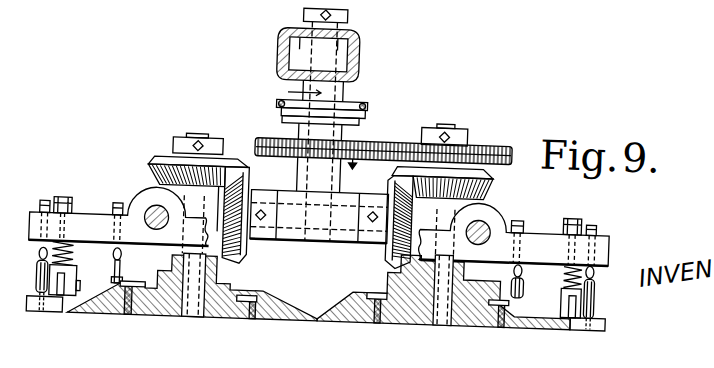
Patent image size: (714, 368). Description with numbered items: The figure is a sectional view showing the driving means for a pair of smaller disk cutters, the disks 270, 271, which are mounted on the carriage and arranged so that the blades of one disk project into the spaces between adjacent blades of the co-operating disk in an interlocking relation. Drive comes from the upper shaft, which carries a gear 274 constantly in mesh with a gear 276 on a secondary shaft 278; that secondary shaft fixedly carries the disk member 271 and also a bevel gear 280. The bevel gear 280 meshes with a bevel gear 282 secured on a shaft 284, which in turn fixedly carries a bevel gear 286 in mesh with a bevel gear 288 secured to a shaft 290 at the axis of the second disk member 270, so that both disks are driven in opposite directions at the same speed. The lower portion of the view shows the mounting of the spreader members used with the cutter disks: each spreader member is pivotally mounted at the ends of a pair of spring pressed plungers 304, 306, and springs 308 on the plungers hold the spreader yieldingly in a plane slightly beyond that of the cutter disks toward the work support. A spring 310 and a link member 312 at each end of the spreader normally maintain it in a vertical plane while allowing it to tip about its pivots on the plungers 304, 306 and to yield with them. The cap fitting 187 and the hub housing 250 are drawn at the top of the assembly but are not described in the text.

The top cap fitting 187 is at (343, 12).
The hub housing 250 is at (391, 53).
The disk 270 is at (239, 321).
The disk 271 is at (484, 321).
The gear 274 is at (357, 140).
The gear 276 is at (488, 140).
The secondary shaft 278 is at (449, 122).
The bevel gear 280 is at (494, 173).
The bevel gear 282 is at (396, 182).
The shaft 284 is at (341, 242).
The bevel gear 286 is at (246, 262).
The bevel gear 288 is at (156, 178).
The shaft 290 is at (203, 138).
The spring pressed plunger 304 is at (577, 210).
The spring pressed plunger 306 is at (65, 205).
The spring 308 is at (77, 276).
The spring 310 is at (34, 222).
The link member 312 is at (124, 266).